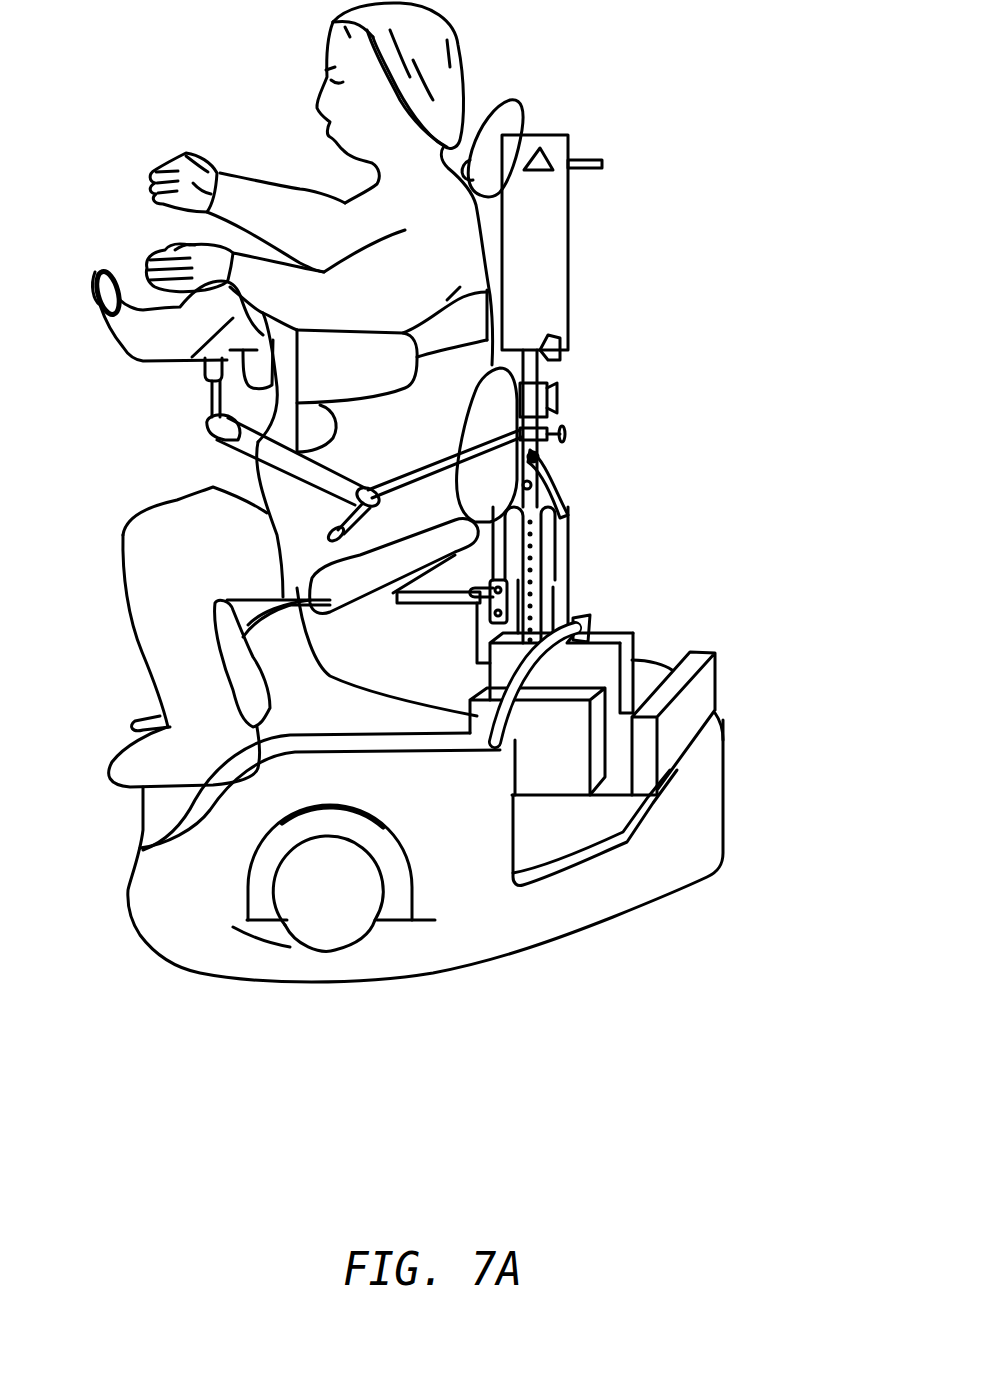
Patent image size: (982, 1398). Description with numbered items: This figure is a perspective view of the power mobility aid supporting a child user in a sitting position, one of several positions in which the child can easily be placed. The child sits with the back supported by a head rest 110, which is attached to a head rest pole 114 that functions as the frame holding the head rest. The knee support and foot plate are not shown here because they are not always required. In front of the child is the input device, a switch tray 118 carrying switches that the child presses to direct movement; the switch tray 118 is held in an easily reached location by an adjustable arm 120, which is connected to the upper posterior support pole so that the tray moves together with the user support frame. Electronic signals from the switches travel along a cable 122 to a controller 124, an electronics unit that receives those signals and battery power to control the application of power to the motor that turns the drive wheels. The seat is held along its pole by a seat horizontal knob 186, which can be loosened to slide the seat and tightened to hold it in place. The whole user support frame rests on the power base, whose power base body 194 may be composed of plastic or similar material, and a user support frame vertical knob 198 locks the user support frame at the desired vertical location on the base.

The head rest 110 is at (507, 100).
The head rest pole 114 is at (560, 208).
The switch tray 118 is at (167, 350).
The adjustable arm 120 is at (207, 425).
The cable 122 is at (213, 487).
The seat horizontal knob 186 is at (387, 592).
The user support frame vertical knob 198 is at (586, 622).
The controller 124 is at (702, 695).
The power base body 194 is at (613, 903).